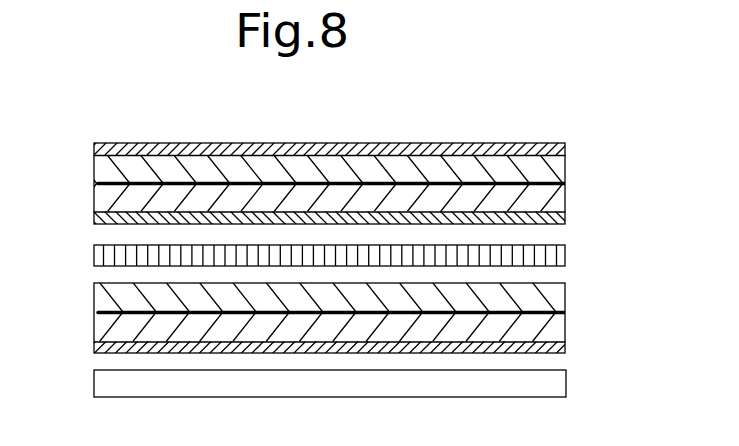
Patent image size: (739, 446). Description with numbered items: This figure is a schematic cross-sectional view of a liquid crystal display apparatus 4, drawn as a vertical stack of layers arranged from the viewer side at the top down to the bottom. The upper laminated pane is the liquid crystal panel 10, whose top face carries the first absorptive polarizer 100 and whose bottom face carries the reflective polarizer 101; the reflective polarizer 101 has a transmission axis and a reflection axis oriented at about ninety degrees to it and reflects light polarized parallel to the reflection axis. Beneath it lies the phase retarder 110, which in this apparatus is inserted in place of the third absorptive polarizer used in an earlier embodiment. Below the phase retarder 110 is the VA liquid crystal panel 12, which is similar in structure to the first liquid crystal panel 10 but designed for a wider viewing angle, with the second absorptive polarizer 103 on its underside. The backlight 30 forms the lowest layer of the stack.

The liquid crystal display apparatus 4 is at (414, 117).
The first liquid crystal panel 10 is at (572, 152).
The first absorptive polarizer 100 is at (94, 150).
The reflective polarizer 101 is at (94, 222).
The phase retarder 110 is at (94, 256).
The VA liquid crystal panel 12 is at (575, 280).
The second absorptive polarizer 103 is at (94, 349).
The backlight 30 is at (566, 383).